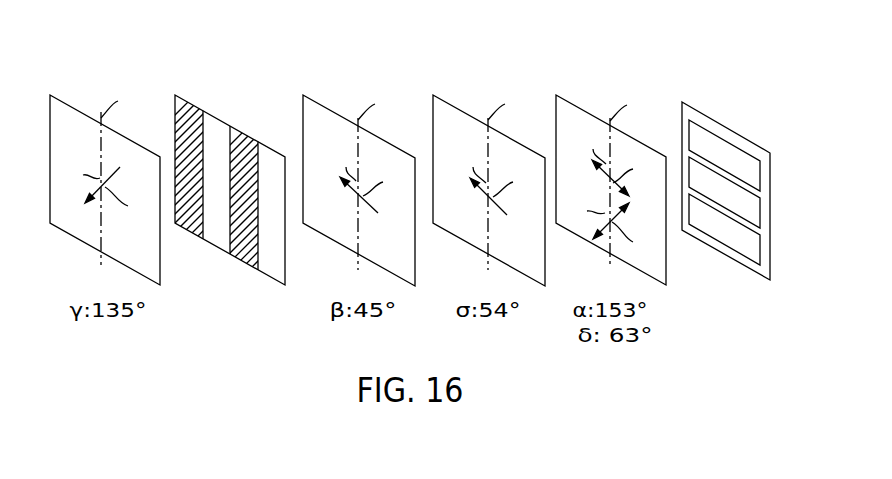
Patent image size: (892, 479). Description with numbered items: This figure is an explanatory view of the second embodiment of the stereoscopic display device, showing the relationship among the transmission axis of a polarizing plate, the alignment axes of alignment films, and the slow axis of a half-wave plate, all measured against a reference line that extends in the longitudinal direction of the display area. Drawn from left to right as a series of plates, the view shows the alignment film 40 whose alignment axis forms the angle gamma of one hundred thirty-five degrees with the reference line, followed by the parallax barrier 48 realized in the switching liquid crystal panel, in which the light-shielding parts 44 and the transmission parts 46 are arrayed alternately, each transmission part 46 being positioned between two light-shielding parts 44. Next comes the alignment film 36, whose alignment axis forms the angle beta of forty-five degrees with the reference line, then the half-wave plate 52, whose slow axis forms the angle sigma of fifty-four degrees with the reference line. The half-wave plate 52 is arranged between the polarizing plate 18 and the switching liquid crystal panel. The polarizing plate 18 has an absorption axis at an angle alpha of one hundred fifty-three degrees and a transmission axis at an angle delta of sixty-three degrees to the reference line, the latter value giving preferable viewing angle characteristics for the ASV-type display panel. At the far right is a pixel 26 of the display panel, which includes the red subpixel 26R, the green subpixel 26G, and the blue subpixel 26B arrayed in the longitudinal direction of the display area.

The alignment film 40 is at (76, 122).
The parallax barrier 48 is at (209, 184).
The light-shielding part 44 is at (192, 118).
The transmission part 46 is at (219, 132).
The alignment film 36 is at (321, 120).
The λ/2 plate 52 is at (451, 120).
The polarizing plate 18 is at (578, 122).
The pixel 26 is at (724, 168).
The red pixel 26R is at (752, 173).
The green pixel 26G is at (752, 210).
The blue pixel 26B is at (752, 247).